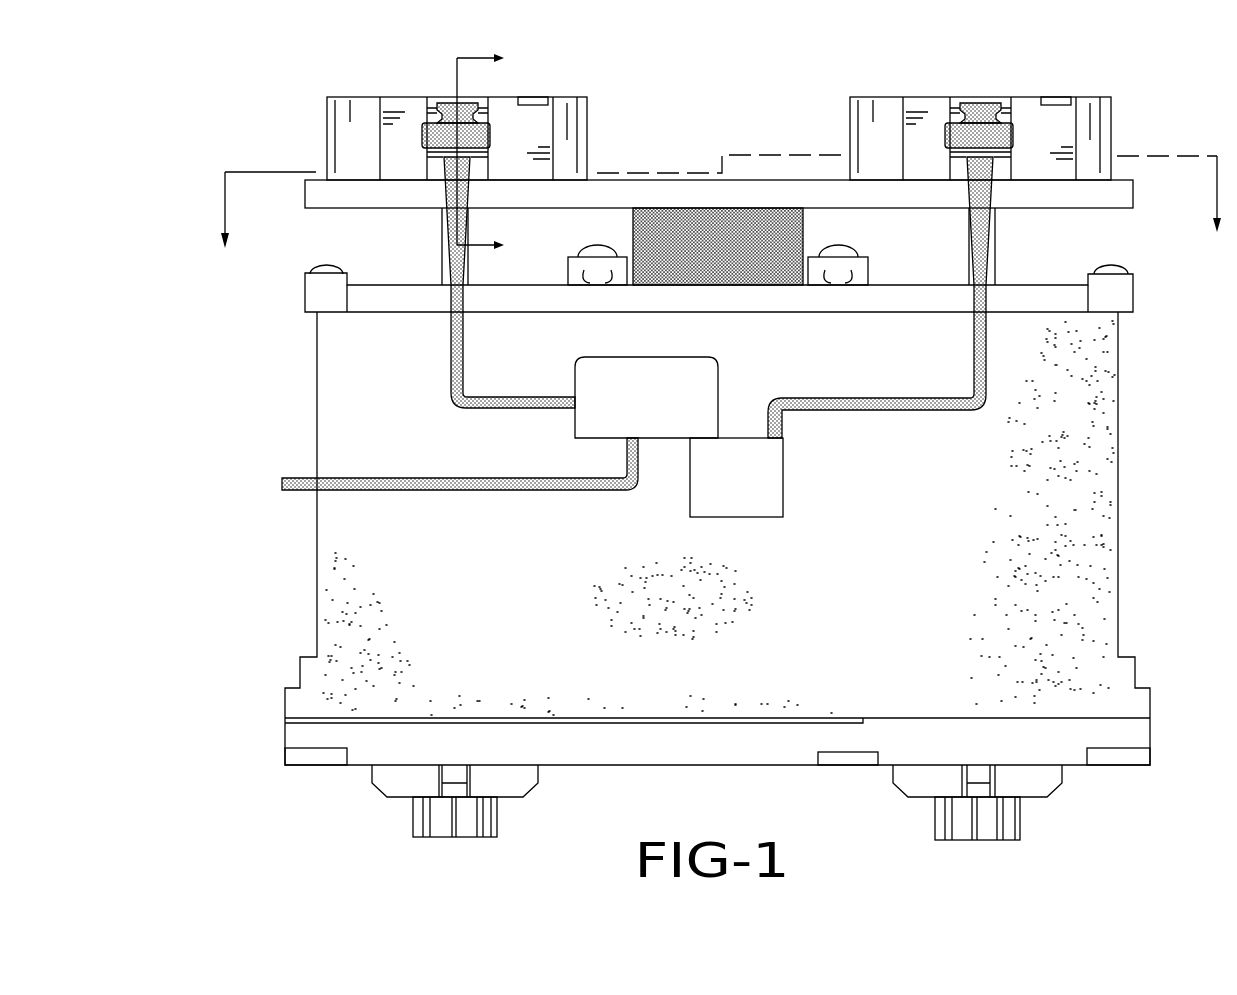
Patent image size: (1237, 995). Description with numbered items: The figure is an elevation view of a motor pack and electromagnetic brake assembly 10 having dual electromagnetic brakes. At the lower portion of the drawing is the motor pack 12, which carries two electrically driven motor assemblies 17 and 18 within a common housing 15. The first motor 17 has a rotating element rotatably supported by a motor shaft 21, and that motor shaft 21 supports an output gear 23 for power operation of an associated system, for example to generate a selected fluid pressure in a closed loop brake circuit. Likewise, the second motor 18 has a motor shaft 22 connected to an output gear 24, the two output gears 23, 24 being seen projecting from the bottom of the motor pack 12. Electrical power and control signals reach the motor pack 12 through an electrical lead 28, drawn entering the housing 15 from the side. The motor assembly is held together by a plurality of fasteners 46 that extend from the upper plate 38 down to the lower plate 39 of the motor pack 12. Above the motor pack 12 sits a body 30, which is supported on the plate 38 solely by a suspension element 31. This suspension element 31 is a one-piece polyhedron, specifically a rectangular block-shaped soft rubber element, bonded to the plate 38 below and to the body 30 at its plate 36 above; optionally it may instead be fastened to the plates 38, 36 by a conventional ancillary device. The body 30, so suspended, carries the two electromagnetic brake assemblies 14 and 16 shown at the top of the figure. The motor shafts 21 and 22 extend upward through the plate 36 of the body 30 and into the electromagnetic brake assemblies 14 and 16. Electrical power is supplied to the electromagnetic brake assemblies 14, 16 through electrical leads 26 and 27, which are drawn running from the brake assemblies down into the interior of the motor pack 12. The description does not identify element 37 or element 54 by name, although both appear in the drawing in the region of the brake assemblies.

The motor pack and electromagnetic brake assembly 10 is at (277, 392).
The motor pack 12 is at (308, 612).
The electromagnetic brake assembly 14 is at (1123, 132).
The common housing 15 is at (1100, 608).
The electromagnetic brake assembly 16 is at (499, 101).
The motor assembly 17 is at (400, 790).
The motor assembly 18 is at (1032, 795).
The motor shaft 21 is at (440, 250).
The motor shaft 22 is at (998, 246).
The output gear 23 is at (436, 817).
The output gear 24 is at (997, 820).
The electrical lead 26 is at (462, 385).
The electrical lead 27 is at (975, 386).
The electrical lead 28 is at (298, 487).
The body 30 is at (752, 208).
The suspension element 31 is at (765, 255).
The plate 36 is at (690, 182).
The terminal block housing 37 is at (358, 124).
The plate 38 is at (1112, 300).
The plate 39 is at (1130, 740).
The fasteners 46 is at (330, 266).
The insert 54 is at (544, 96).